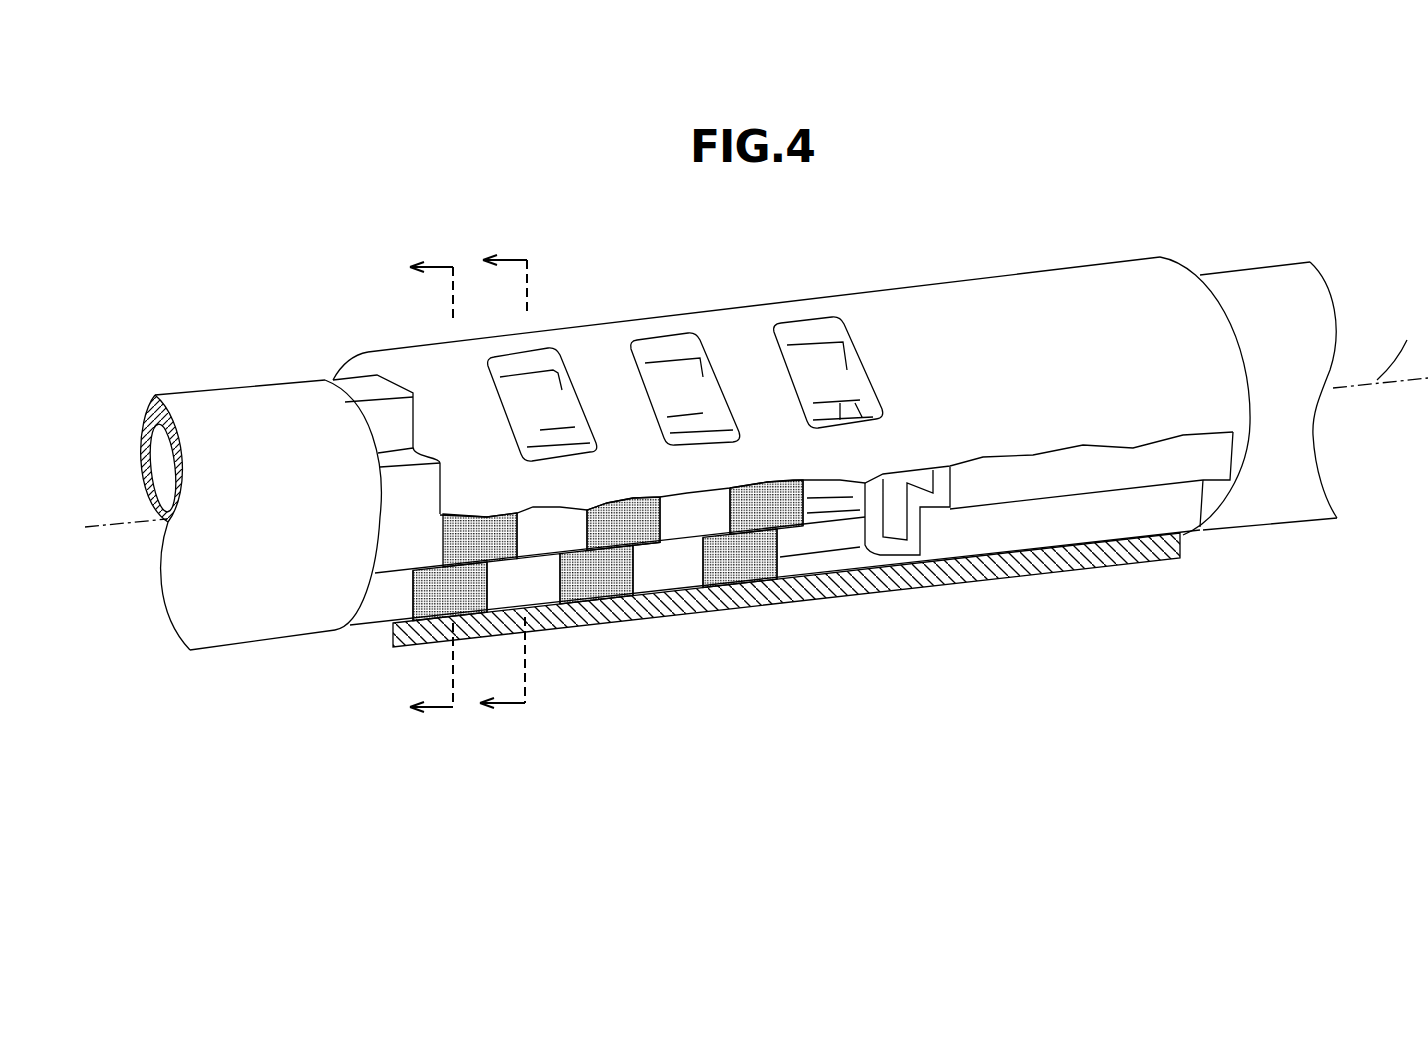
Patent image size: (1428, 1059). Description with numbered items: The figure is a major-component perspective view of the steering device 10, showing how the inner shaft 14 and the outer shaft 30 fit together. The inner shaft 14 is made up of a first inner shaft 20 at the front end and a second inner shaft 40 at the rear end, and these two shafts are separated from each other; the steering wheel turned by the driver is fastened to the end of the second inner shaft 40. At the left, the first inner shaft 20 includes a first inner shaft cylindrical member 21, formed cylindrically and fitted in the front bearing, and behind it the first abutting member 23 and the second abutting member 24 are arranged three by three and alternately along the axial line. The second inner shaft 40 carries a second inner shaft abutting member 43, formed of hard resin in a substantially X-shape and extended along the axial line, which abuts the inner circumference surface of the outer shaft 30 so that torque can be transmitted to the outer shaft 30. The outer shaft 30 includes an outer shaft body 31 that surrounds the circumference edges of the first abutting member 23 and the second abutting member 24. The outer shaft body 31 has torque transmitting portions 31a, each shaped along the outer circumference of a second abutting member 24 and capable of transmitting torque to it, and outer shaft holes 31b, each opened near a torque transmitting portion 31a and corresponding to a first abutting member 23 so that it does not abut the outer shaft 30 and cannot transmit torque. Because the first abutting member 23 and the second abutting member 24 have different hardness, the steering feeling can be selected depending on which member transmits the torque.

The steering device 10 is at (342, 158).
The inner shaft 14 is at (733, 423).
The first inner shaft 20 is at (221, 378).
The first inner shaft cylindrical member 21 is at (292, 610).
The first abutting member 23 is at (385, 598).
The second abutting member 24 is at (455, 588).
The outer shaft 30 is at (963, 280).
The outer shaft body 31 is at (1036, 304).
The torque transmitting portion 31a is at (433, 423).
The outer shaft hole 31b is at (570, 430).
The second inner shaft 40 is at (1251, 264).
The second inner shaft abutting member 43 is at (1085, 525).